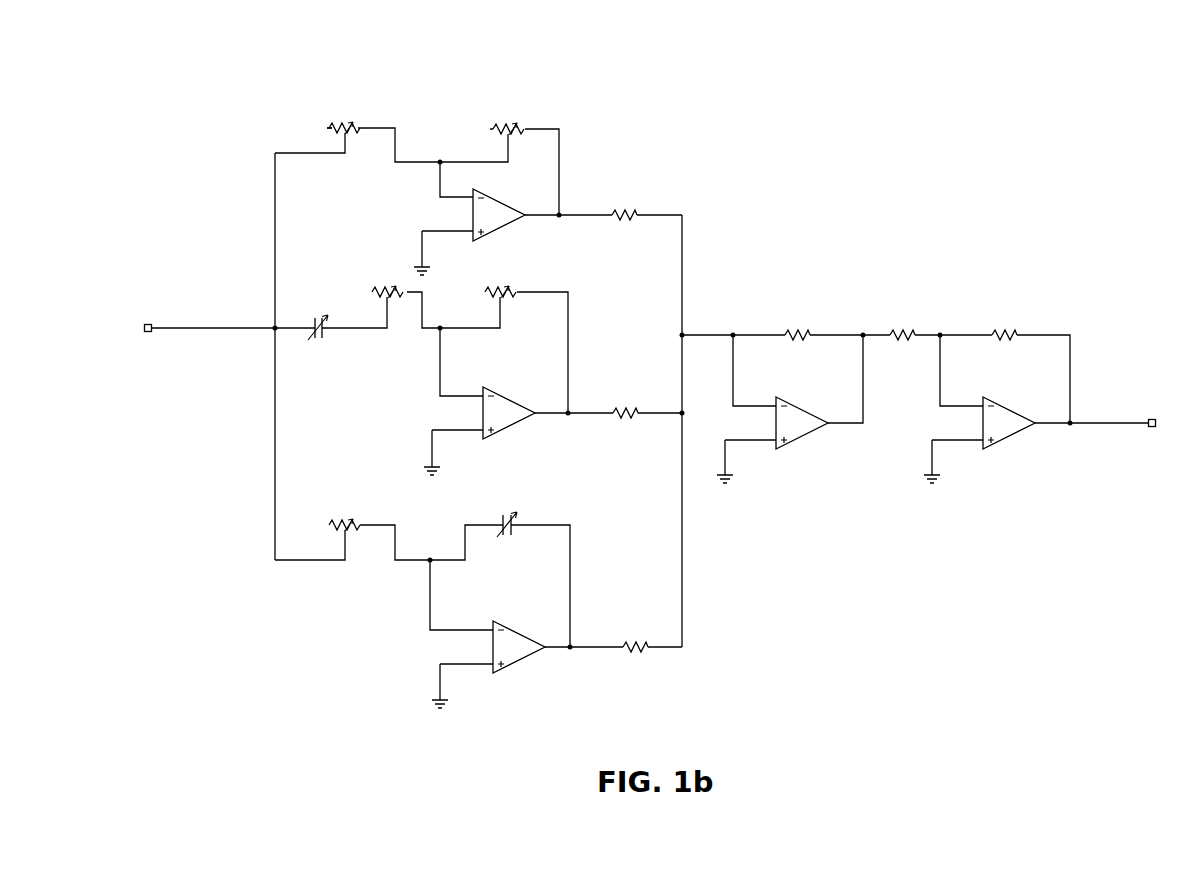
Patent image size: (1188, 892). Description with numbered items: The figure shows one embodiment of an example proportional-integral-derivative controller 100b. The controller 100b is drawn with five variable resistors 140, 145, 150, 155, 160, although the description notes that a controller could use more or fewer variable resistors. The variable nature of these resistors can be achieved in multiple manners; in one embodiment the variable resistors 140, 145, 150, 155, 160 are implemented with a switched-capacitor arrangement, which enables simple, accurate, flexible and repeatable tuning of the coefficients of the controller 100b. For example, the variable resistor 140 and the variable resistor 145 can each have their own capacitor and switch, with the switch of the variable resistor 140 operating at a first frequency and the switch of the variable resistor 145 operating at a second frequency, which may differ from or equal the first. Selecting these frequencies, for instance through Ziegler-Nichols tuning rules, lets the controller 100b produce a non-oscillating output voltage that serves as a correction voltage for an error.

The proportional-integral-derivative controller 100b is at (954, 104).
The variable resistor 140 is at (352, 124).
The variable resistor 145 is at (512, 124).
The variable resistor 150 is at (394, 290).
The variable resistor 155 is at (502, 290).
The variable resistor 160 is at (354, 530).